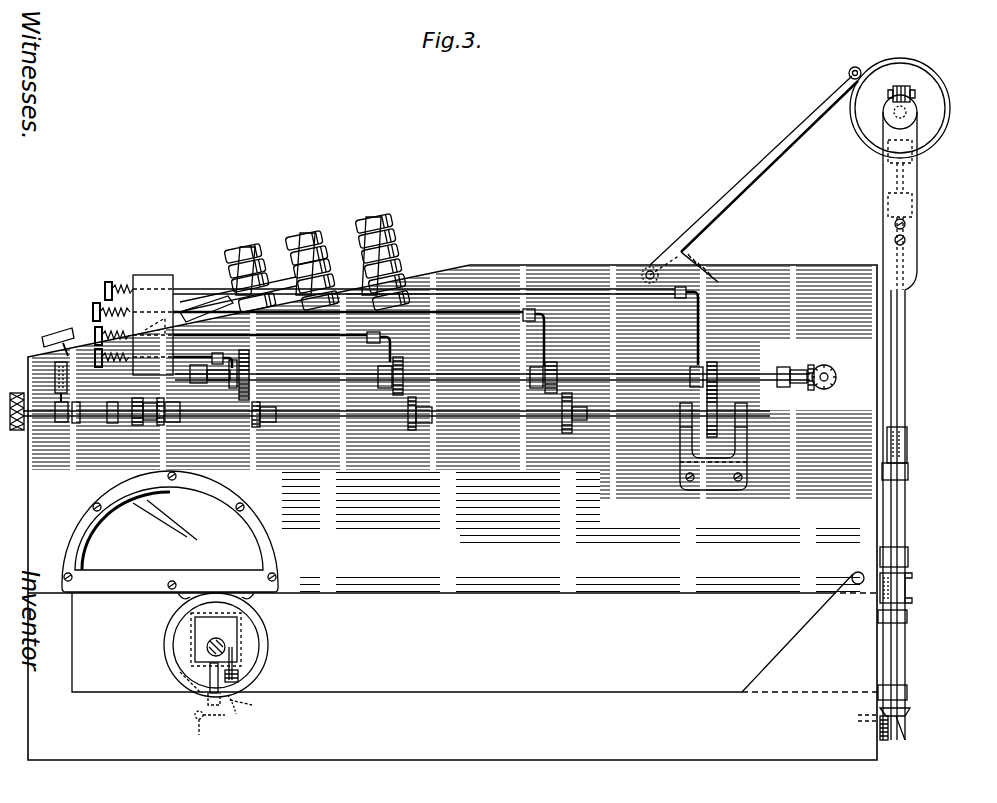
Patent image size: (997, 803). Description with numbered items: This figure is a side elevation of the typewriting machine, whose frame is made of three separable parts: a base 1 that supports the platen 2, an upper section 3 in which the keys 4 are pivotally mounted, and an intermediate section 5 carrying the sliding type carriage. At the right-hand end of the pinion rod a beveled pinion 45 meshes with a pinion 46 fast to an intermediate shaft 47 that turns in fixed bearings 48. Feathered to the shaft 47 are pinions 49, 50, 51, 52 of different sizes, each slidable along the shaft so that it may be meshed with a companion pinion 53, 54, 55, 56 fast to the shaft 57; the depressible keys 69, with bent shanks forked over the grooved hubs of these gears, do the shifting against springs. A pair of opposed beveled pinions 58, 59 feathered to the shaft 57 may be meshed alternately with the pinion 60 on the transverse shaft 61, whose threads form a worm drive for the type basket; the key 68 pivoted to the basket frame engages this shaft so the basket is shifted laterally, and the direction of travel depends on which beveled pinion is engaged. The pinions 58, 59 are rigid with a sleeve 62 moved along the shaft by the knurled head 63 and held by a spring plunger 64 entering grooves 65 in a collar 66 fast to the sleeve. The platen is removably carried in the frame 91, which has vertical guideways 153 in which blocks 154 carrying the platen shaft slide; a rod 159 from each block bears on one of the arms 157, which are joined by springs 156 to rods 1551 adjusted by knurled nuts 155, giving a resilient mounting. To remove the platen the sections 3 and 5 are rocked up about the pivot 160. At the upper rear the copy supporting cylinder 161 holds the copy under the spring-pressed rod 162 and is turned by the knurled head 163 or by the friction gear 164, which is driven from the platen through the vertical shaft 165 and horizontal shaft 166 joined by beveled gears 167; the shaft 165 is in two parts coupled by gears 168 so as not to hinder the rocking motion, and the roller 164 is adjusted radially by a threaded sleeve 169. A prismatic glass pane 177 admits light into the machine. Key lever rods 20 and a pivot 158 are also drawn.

The base 1 is at (780, 668).
The platen 2 is at (268, 645).
The upper section 3 is at (560, 266).
The keys 4 is at (361, 233).
The intermediate section 5 is at (540, 594).
The key lever rods 20 is at (440, 275).
The beveled pinion 45 is at (830, 368).
The pinion 46 is at (811, 365).
The intermediate shaft 47 is at (745, 374).
The fixed bearings 48 is at (785, 388).
The pinion 49 is at (712, 362).
The pinion 50 is at (556, 365).
The pinion 51 is at (404, 366).
The pinion 52 is at (250, 370).
The companion pinion 53 is at (707, 400).
The companion pinion 54 is at (562, 421).
The companion pinion 55 is at (408, 425).
The companion pinion 56 is at (252, 421).
The shaft 57 is at (497, 417).
The beveled pinion 58 is at (162, 424).
The beveled pinion 59 is at (112, 424).
The pinion 60 is at (138, 426).
The transverse shaft 61 is at (148, 403).
The sleeve 62 is at (78, 424).
The knurled head 63 is at (16, 393).
The spring plunger 64 is at (55, 376).
The grooves 65 is at (62, 423).
The collar 66 is at (62, 422).
The key 68 is at (56, 334).
The keys 69 is at (96, 348).
The frame 91 is at (180, 690).
The vertical guideways 153 is at (195, 635).
The blocks 154 is at (226, 628).
The knurled nuts 155 is at (240, 678).
The rods 1551 is at (234, 660).
The springs 156 is at (252, 705).
The arms 157 is at (230, 716).
The pivot 158 is at (198, 720).
The rod 159 is at (205, 690).
The pivot 160 is at (858, 571).
The copy supporting cylinder 161 is at (910, 62).
The spring-pressed rod 162 is at (850, 72).
The knurled head 163 is at (918, 110).
The friction gear 164 is at (873, 157).
The vertical shaft 165 is at (905, 391).
The horizontal shaft 166 is at (912, 88).
The beveled gears 167 is at (898, 731).
The gears 168 is at (912, 598).
The sleeve 169 is at (888, 200).
The prismatic glass pane 177 is at (170, 531).